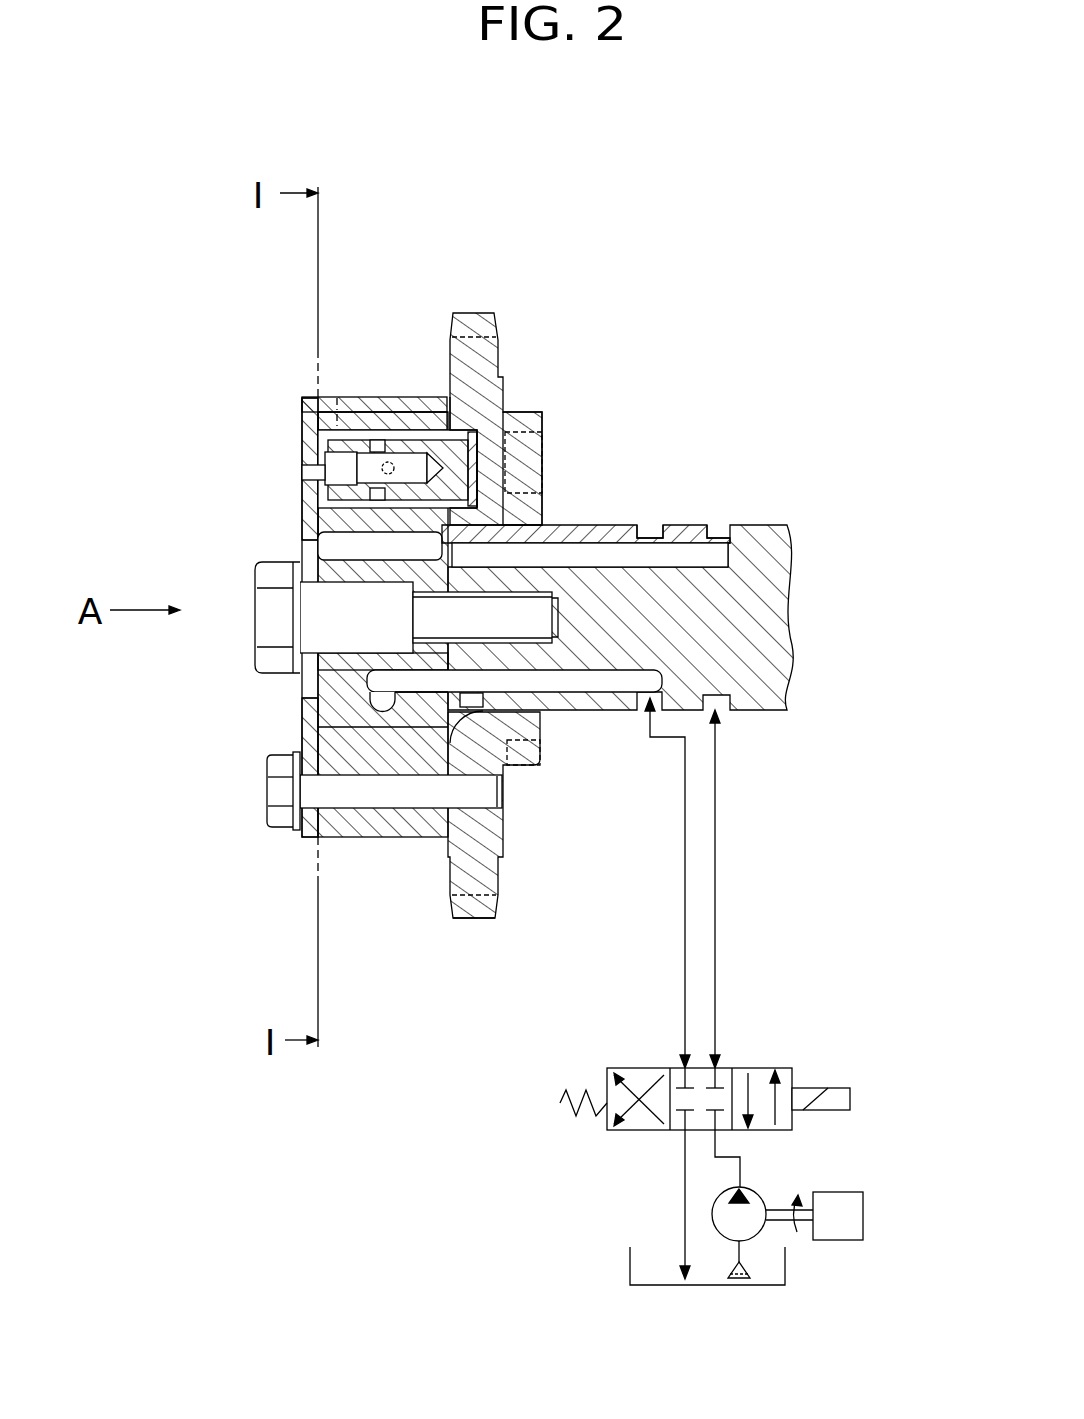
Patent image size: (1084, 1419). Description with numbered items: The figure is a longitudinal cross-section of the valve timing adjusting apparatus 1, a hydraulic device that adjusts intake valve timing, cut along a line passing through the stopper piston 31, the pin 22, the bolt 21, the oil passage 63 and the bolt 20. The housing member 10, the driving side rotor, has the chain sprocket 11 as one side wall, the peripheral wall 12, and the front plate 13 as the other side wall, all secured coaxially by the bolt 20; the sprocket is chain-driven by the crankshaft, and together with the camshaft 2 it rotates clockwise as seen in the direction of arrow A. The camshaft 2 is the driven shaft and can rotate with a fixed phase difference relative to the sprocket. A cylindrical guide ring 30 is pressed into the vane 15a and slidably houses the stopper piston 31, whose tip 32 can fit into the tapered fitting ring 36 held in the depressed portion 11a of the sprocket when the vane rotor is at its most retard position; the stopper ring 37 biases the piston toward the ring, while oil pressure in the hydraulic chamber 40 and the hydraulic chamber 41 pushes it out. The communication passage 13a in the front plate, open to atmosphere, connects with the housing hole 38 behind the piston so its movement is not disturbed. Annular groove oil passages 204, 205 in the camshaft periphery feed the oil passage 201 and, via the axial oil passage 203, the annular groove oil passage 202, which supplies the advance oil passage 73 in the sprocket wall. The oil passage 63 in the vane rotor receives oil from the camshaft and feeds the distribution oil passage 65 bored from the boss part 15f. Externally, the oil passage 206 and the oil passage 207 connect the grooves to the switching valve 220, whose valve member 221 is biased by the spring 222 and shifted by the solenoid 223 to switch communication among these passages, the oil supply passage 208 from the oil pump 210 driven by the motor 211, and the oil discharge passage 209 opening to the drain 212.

The valve timing adjusting apparatus 1 is at (443, 910).
The camshaft 2 is at (755, 523).
The housing member 10 is at (504, 330).
The chain sprocket 11 is at (495, 920).
The depressed portion 11a is at (470, 475).
The peripheral wall 12 is at (346, 420).
The front plate 13 is at (300, 405).
The communication passage 13a is at (302, 470).
The vane 15a is at (397, 440).
The boss part 15f is at (338, 668).
The bolt 20 is at (268, 790).
The bolt 21 is at (258, 632).
The pin 22 is at (390, 544).
The guide ring 30 is at (430, 445).
The stopper piston 31 is at (470, 440).
The tip 32 is at (472, 468).
The fitting ring 36 is at (460, 397).
The stopper ring 37 is at (336, 400).
The housing hole 38 is at (340, 472).
The hydraulic chamber 40 is at (515, 440).
The hydraulic chamber 41 is at (383, 440).
The oil passage 63 is at (409, 690).
The distribution oil passage 65 is at (380, 705).
The advance oil passage 73 is at (507, 770).
The oil passage 201 is at (598, 683).
The annular groove oil passage 202 is at (475, 533).
The oil passage 203 is at (715, 555).
The annular groove oil passage 204 is at (648, 536).
The annular groove oil passage 205 is at (717, 536).
The oil passage 206 is at (684, 905).
The oil passage 207 is at (716, 870).
The oil supply passage 208 is at (742, 1170).
The oil discharge passage 209 is at (684, 1197).
The oil pump 210 is at (753, 1233).
The motor 211 is at (865, 1213).
The drain 212 is at (628, 1262).
The switching valve 220 is at (786, 1060).
The valve member 221 is at (622, 1130).
The spring 222 is at (556, 1102).
The solenoid 223 is at (838, 1088).